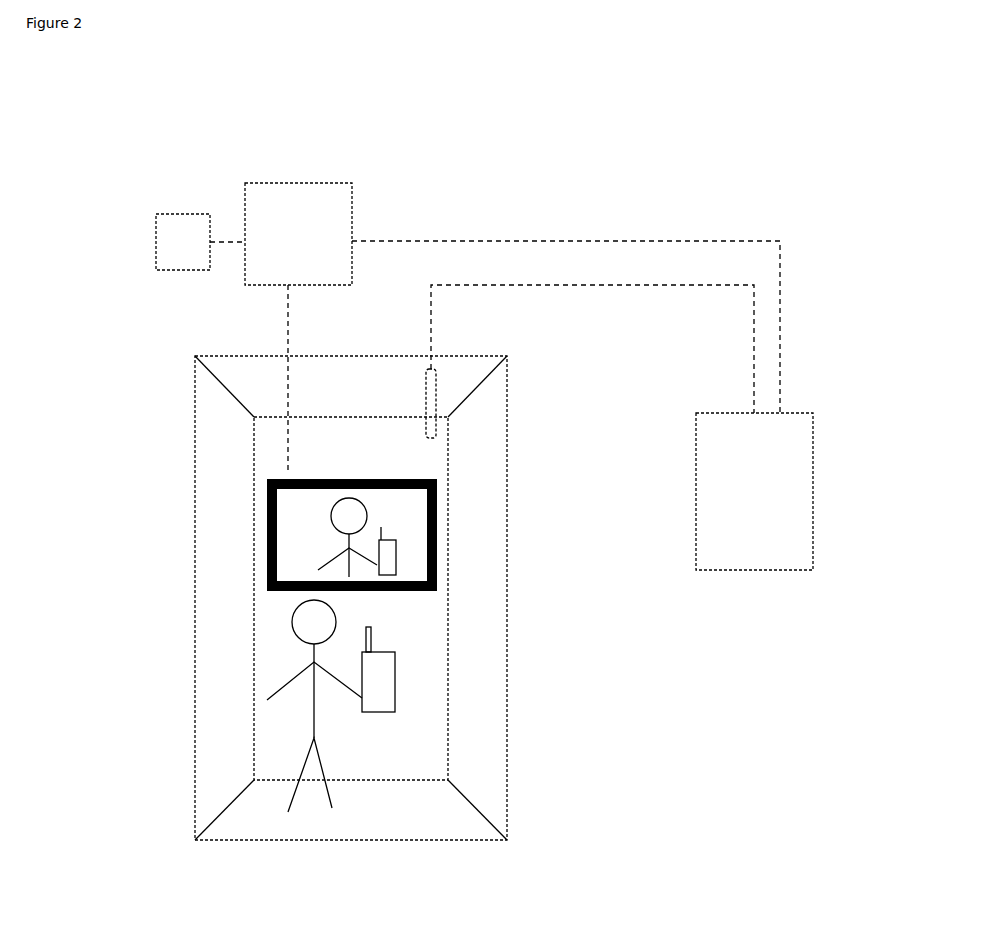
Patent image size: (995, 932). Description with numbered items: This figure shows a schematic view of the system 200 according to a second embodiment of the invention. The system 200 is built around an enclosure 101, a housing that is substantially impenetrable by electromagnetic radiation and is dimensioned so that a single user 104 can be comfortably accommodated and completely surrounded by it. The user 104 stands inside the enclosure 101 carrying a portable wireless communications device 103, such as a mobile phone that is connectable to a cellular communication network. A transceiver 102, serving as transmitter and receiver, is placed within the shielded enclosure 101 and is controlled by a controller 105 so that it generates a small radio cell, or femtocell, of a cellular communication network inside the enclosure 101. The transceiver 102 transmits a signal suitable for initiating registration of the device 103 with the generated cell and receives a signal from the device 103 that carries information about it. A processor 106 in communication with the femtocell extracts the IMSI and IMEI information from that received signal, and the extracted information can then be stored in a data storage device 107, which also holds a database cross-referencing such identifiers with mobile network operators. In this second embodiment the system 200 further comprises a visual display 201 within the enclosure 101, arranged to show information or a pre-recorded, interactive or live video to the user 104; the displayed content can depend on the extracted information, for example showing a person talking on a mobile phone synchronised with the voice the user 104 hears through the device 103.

The system 200 is at (142, 133).
The enclosure 101 is at (488, 597).
The transceiver 102 is at (438, 398).
The portable wireless communications device 103 is at (395, 683).
The user 104 is at (312, 697).
The controller 105 is at (738, 570).
The processor 106 is at (352, 205).
The data storage device 107 is at (188, 270).
The visual display 201 is at (267, 532).